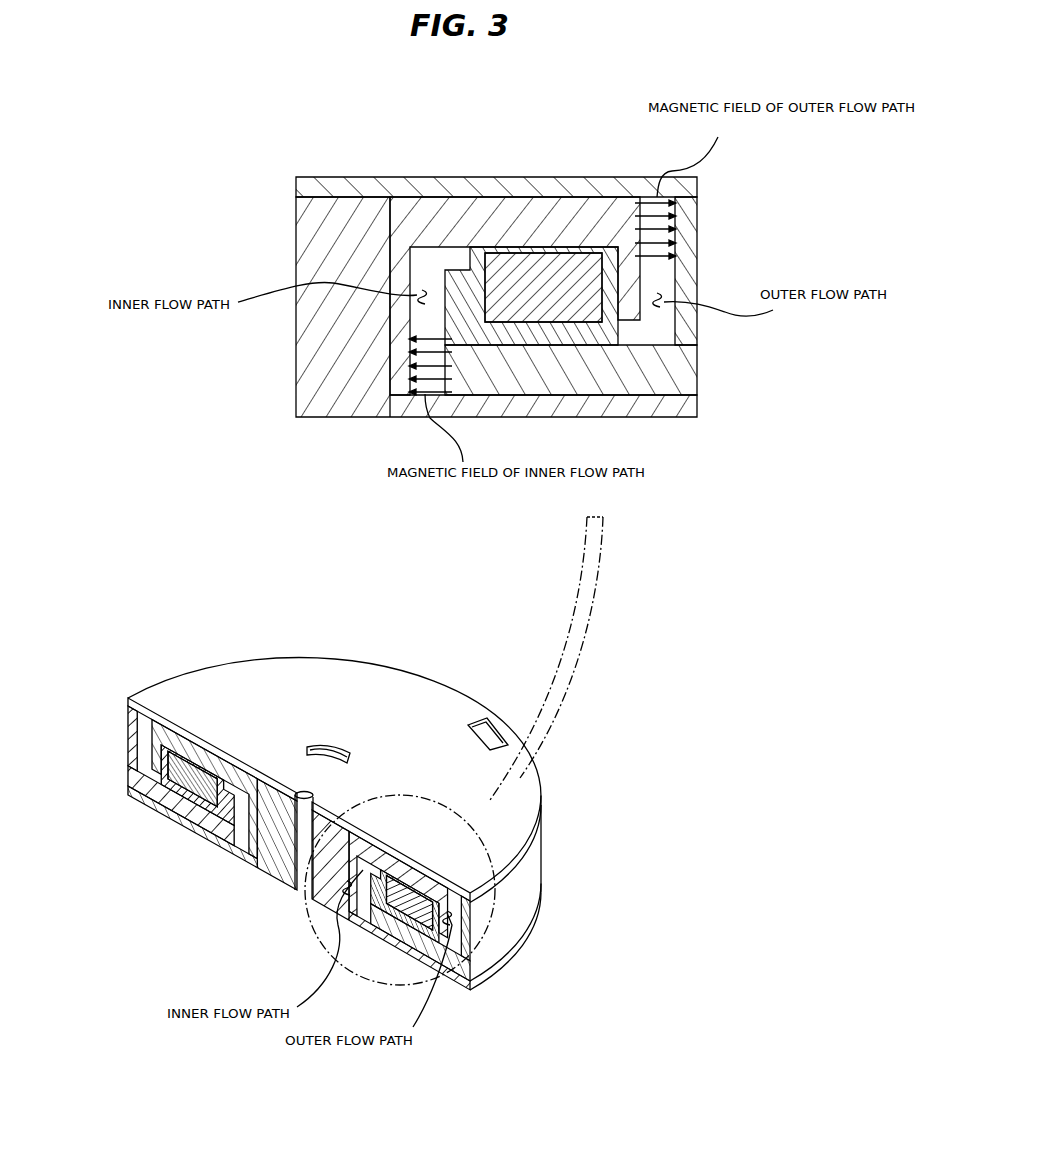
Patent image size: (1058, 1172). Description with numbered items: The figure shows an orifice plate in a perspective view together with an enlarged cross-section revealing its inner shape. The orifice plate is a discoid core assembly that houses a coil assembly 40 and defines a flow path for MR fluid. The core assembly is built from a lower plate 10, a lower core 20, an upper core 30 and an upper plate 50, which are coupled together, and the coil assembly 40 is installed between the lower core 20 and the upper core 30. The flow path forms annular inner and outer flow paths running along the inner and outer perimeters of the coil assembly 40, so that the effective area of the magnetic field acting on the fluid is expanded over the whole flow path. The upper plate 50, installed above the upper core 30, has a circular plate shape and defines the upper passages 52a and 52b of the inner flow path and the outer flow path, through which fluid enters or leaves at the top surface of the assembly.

The lower plate 10 is at (355, 403).
The lower core 20 is at (653, 365).
The upper core 30 is at (483, 225).
The coil assembly 40 is at (563, 283).
The upper plate 50 is at (338, 188).
The upper passage 52a is at (323, 745).
The upper passage 52b is at (488, 723).